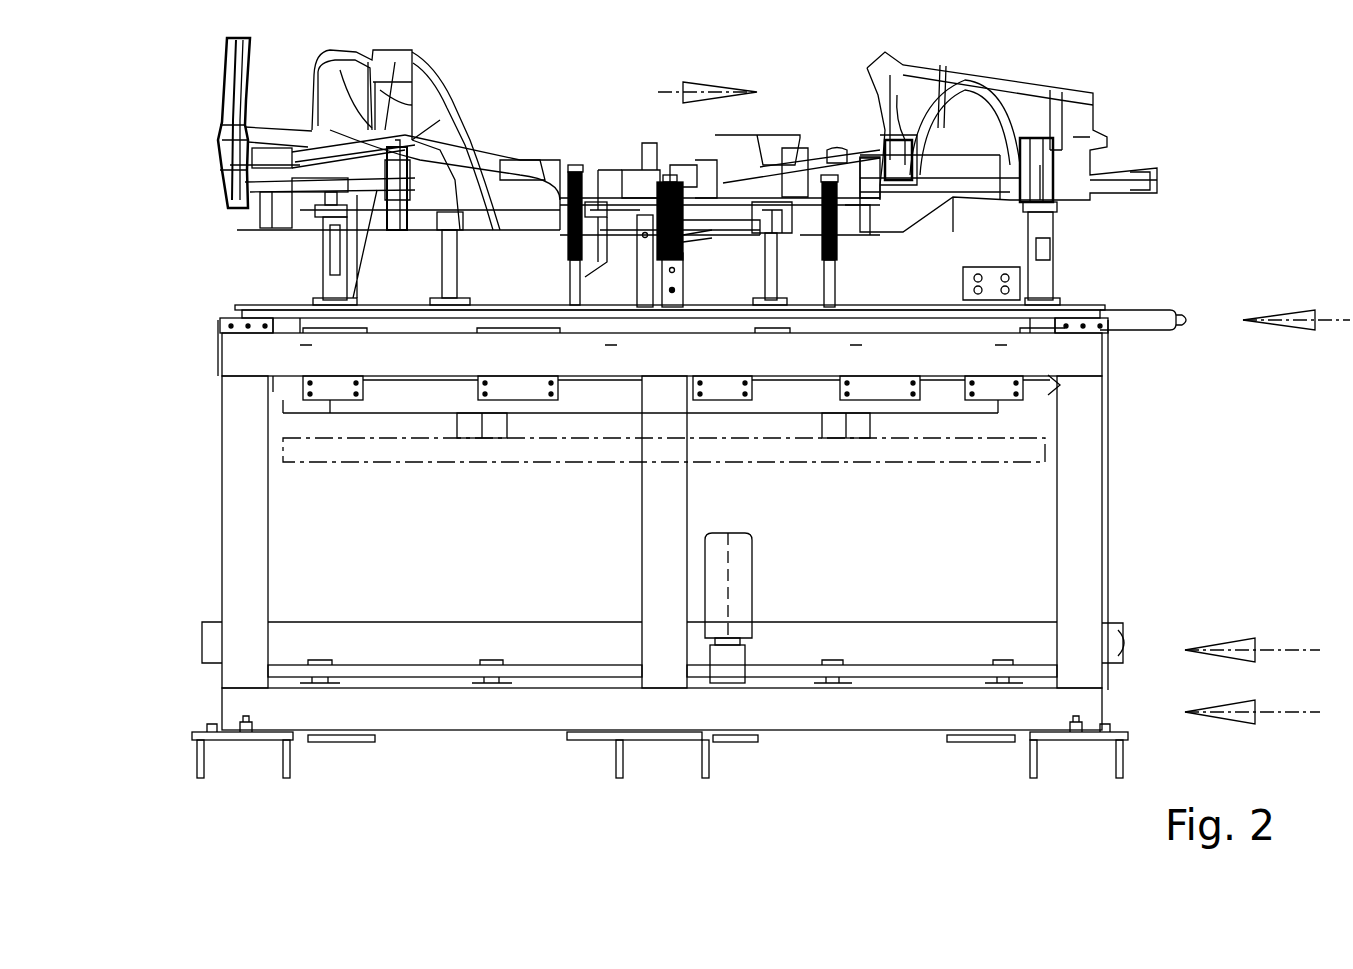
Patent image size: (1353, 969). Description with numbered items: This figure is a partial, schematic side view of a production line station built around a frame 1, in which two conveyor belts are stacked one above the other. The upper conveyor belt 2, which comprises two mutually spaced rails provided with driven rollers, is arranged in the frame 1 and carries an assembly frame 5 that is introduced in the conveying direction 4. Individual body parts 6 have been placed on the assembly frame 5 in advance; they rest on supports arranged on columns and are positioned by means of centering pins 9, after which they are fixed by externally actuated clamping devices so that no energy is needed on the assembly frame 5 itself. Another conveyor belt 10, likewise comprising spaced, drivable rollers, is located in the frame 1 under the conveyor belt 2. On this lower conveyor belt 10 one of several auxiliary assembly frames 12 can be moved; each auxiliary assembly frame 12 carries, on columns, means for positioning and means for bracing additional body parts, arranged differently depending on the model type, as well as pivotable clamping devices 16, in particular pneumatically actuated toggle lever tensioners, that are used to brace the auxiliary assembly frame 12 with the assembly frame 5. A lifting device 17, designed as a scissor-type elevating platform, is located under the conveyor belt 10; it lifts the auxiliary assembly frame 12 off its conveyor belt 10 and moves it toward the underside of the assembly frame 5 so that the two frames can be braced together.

The frame 1 is at (1082, 563).
The upper conveyor belt 2 is at (1225, 310).
The conveying direction 4 is at (707, 82).
The assembly frame 5 is at (883, 307).
The body parts 6 is at (457, 112).
The centering pins 9 is at (320, 285).
The conveyor belt 10 is at (1252, 641).
The auxiliary assembly frame 12 is at (388, 402).
The pivotable clamping device 16 is at (560, 293).
The lifting device 17 is at (1252, 704).